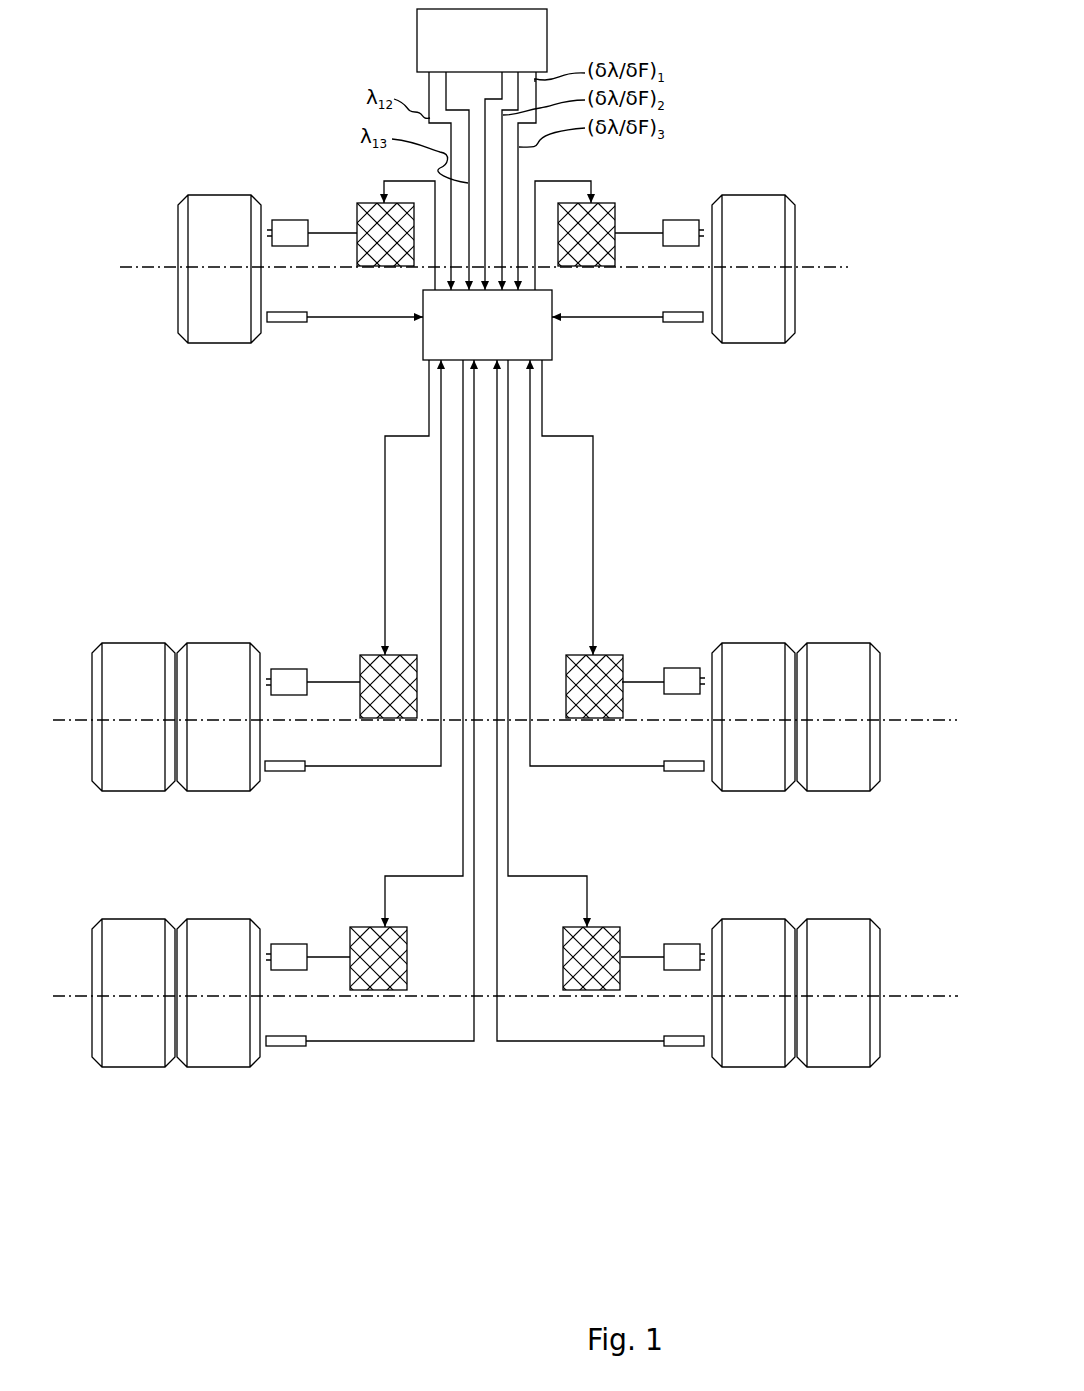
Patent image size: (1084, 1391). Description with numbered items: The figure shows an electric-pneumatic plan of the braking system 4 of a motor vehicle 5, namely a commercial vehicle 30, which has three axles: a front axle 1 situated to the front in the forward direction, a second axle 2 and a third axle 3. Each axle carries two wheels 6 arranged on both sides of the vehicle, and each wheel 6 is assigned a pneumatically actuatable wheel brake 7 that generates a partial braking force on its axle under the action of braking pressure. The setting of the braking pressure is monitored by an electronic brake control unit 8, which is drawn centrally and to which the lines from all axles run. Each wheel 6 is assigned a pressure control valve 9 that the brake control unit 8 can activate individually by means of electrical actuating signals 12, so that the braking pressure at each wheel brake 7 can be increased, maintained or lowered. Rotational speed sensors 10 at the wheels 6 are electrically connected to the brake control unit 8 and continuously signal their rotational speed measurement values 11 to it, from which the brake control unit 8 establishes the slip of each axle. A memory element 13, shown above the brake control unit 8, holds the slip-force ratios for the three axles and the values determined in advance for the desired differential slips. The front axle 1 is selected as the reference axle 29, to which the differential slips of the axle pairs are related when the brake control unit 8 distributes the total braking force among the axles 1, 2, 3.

The front axle 1 is at (137, 270).
The second axle 2 is at (80, 722).
The third axle 3 is at (72, 1000).
The braking system 4 is at (225, 491).
The motor vehicle 5 is at (722, 96).
The wheel 6 is at (220, 200).
The wheel brake 7 is at (679, 668).
The electronic brake control unit 8 is at (480, 337).
The pressure control valve 9 is at (615, 655).
The rotational speed sensor 10 is at (685, 773).
The rotational speed measurement values 11 is at (593, 769).
The electrical actuating signals 12 is at (385, 457).
The memory element 13 is at (470, 52).
The reference axle 29 is at (127, 241).
The commercial vehicle 30 is at (259, 98).